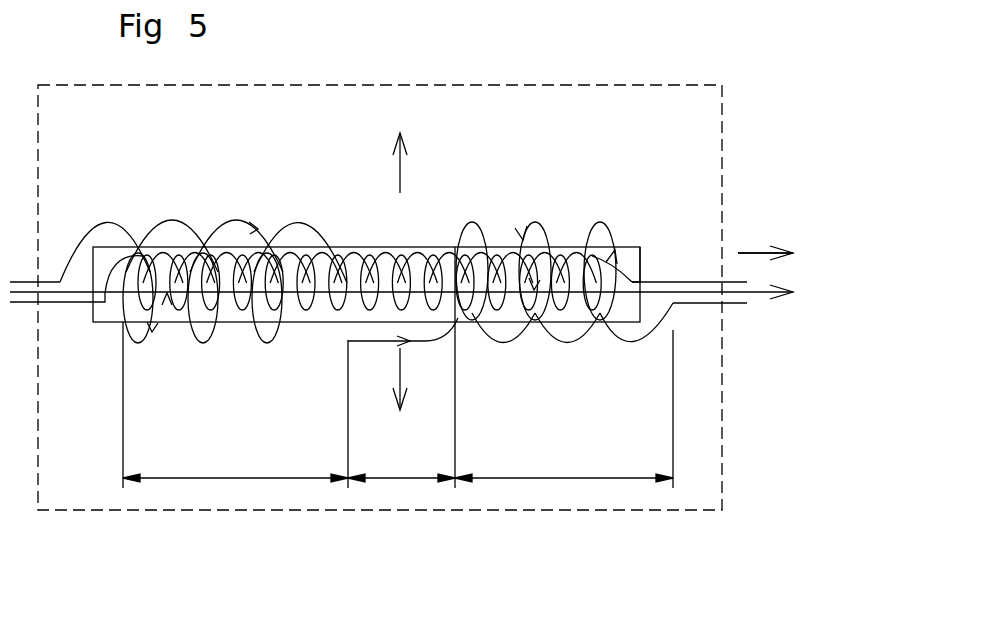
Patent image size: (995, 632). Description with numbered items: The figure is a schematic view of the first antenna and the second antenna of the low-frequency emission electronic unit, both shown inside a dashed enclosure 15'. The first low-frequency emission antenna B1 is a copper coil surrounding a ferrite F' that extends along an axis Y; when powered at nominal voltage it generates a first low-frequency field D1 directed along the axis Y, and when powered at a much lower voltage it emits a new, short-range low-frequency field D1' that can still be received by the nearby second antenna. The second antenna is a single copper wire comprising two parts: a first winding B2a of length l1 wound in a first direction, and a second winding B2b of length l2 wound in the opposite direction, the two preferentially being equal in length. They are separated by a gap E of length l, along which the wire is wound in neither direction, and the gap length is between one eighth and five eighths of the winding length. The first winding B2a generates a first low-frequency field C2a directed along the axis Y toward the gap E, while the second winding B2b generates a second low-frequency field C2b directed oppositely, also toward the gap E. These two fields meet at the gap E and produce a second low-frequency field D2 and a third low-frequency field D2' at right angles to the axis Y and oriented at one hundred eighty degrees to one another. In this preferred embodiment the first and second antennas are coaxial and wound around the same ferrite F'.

The printer / ink supply unit housing 15' is at (431, 335).
The first low-frequency emission antenna B1 is at (508, 258).
The first winding B2a is at (222, 225).
The second winding B2b is at (545, 232).
The first low-frequency field C2a is at (372, 270).
The second low-frequency field C2b is at (432, 270).
The first low-frequency field D1 is at (765, 225).
The new low-frequency field D1' is at (765, 235).
The second low-frequency field D2 is at (400, 150).
The third low-frequency field D2' is at (401, 395).
The gap E is at (428, 341).
The ferrite F' is at (669, 231).
The axis Y is at (413, 290).
The length of the first winding l1 is at (235, 405).
The length of the gap l is at (401, 367).
The length of the second winding l2 is at (564, 409).